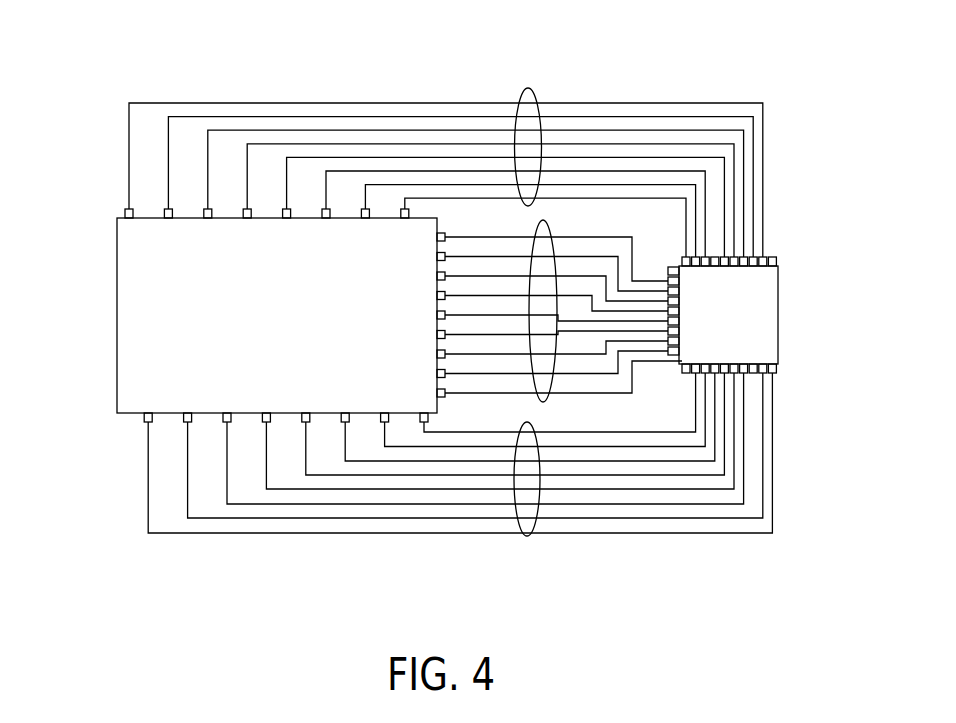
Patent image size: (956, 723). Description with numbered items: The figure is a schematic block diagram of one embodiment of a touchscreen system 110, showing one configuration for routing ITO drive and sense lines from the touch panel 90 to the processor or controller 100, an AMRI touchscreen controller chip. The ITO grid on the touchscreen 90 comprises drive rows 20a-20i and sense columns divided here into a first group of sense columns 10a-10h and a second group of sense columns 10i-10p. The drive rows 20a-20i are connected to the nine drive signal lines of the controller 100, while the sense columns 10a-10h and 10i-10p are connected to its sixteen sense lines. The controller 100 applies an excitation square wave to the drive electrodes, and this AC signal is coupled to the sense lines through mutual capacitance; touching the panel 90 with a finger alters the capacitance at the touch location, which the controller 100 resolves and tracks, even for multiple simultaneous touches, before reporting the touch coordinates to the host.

The touch sensor system 110 is at (100, 78).
The touch panel 90 is at (142, 300).
The processor or controller 100 is at (768, 312).
The sense columns 10a-10h is at (523, 90).
The drive rows 20a-20i is at (543, 222).
The sense columns 10i-10p is at (527, 536).